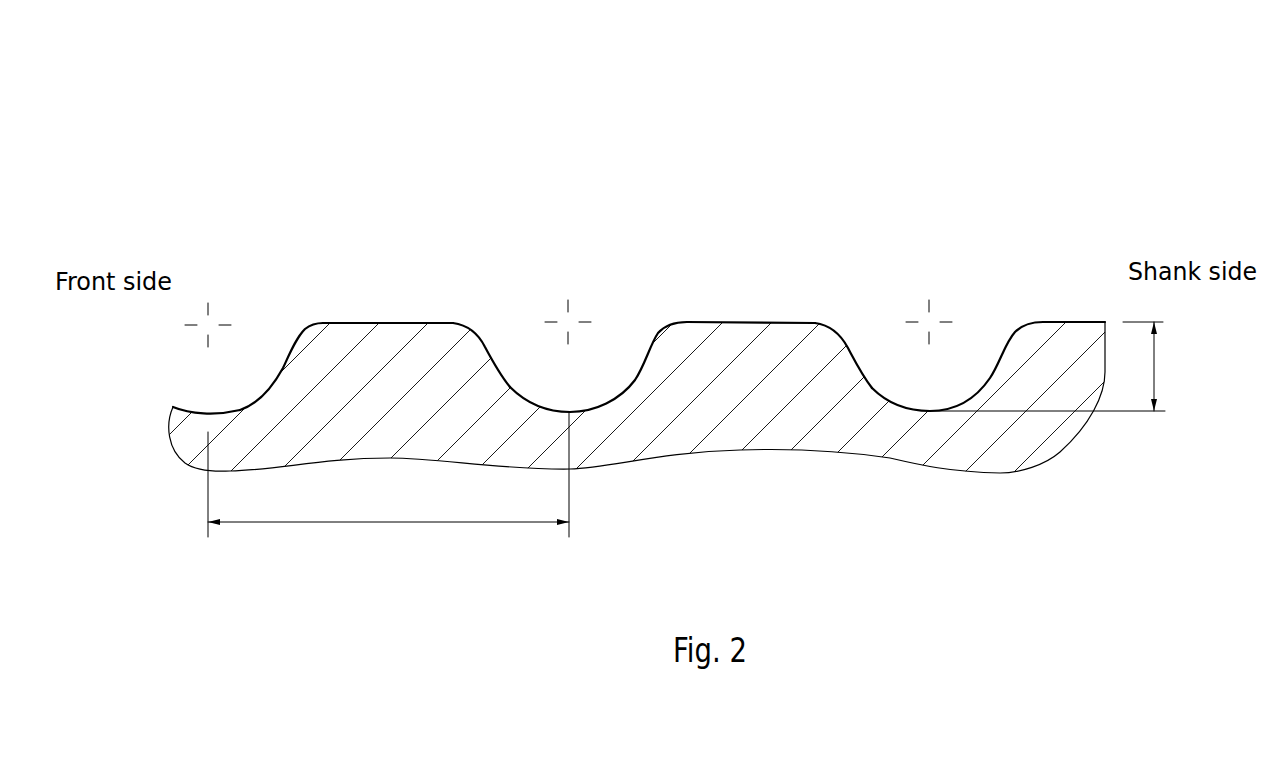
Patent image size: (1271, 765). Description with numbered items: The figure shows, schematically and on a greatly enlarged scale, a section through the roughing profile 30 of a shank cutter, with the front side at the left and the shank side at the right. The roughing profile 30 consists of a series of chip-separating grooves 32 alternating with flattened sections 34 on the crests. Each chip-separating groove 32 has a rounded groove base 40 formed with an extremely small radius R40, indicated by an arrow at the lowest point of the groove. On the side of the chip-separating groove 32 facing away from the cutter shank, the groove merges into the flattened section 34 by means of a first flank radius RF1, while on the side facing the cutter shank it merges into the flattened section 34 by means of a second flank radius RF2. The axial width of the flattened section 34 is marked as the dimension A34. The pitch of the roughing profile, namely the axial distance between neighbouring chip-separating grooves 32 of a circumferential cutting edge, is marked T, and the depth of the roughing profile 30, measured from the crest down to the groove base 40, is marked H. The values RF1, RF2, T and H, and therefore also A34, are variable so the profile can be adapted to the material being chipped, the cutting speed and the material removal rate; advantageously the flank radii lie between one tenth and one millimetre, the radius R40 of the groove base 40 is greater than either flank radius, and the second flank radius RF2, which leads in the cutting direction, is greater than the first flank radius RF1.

The roughing profile 30 is at (635, 382).
The chip-separating groove 32 is at (897, 365).
The flattened section 34 is at (747, 320).
The groove base 40 is at (930, 410).
The axial dimension of the flattened section A34 is at (446, 310).
The first flank radius RF1 is at (473, 328).
The second flank radius RF2 is at (307, 329).
The radius of the groove base R40 is at (572, 408).
The depth of the roughing profile H is at (1155, 365).
The pitch of the roughing profile T is at (389, 522).